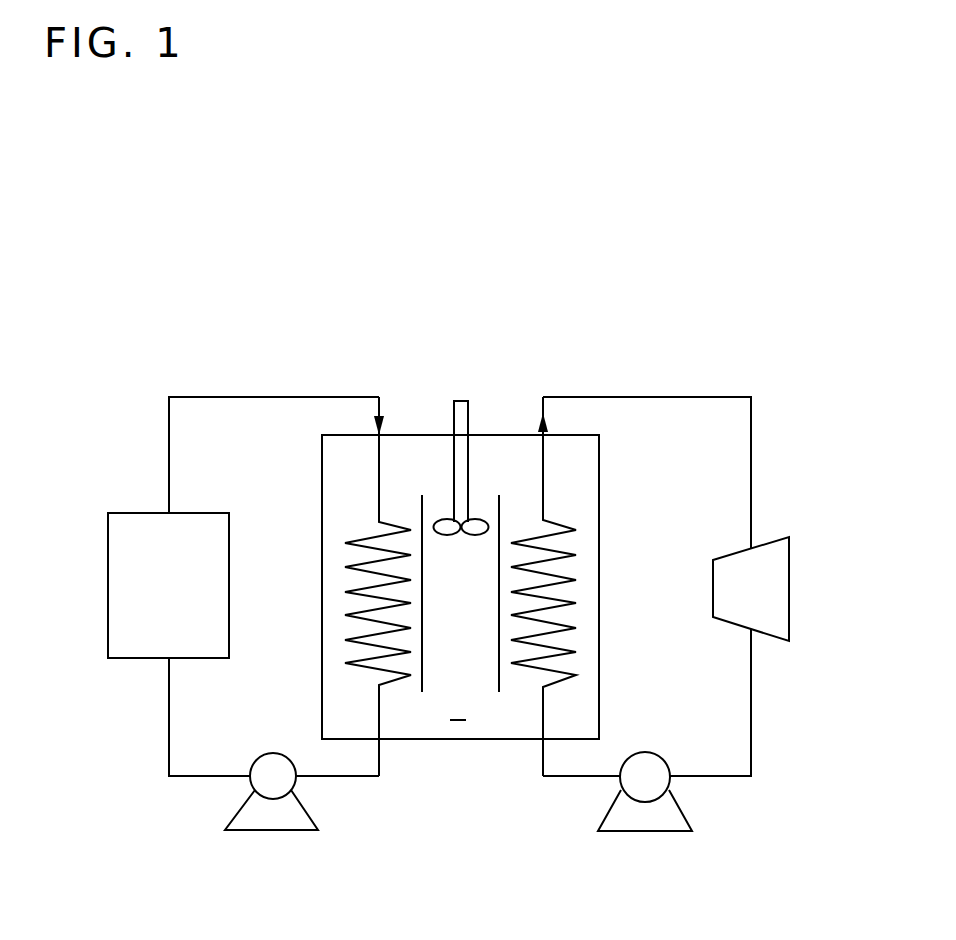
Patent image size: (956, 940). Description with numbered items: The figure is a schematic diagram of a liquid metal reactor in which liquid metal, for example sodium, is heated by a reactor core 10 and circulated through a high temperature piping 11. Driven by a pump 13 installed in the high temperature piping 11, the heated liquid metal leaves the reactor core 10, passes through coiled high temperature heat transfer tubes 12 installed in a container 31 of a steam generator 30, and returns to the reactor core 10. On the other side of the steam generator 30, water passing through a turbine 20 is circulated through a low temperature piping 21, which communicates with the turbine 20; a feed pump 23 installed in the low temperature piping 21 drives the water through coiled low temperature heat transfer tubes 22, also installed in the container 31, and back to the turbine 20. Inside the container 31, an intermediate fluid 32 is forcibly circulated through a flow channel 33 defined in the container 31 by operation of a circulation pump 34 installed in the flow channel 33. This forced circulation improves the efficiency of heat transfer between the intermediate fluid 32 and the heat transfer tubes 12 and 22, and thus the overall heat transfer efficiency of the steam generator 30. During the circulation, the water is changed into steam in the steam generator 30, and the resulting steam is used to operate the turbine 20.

The reactor core 10 is at (118, 606).
The high temperature piping 11 is at (168, 754).
The coiled high temperature heat transfer tubes 12 is at (400, 680).
The pump 13 is at (272, 818).
The turbine 20 is at (783, 610).
The low temperature piping 21 is at (752, 745).
The coiled low temperature heat transfer tubes 22 is at (527, 672).
The feed pump 23 is at (657, 825).
The steam generator 30 is at (406, 436).
The container 31 is at (528, 740).
The intermediate fluid 32 is at (459, 721).
The flow channel 33 is at (497, 497).
The circulation pump 34 is at (455, 463).